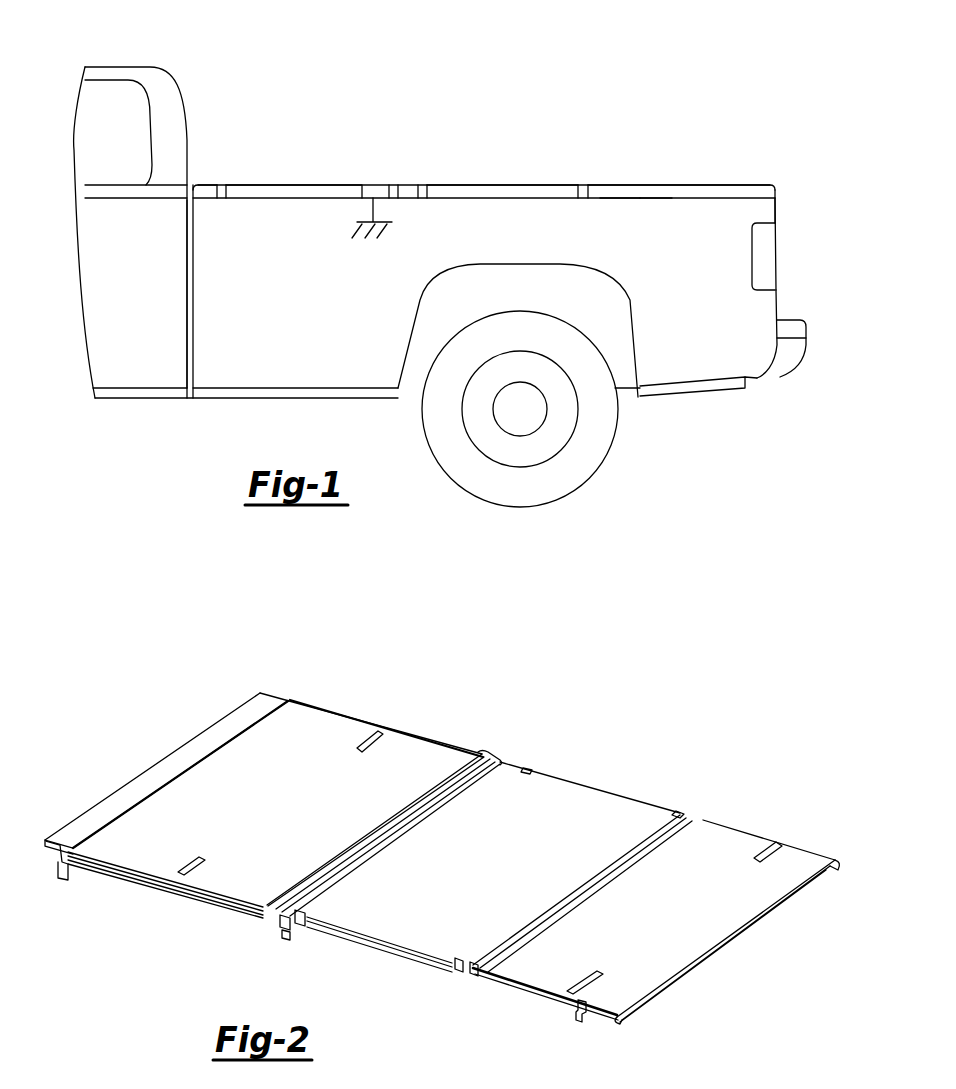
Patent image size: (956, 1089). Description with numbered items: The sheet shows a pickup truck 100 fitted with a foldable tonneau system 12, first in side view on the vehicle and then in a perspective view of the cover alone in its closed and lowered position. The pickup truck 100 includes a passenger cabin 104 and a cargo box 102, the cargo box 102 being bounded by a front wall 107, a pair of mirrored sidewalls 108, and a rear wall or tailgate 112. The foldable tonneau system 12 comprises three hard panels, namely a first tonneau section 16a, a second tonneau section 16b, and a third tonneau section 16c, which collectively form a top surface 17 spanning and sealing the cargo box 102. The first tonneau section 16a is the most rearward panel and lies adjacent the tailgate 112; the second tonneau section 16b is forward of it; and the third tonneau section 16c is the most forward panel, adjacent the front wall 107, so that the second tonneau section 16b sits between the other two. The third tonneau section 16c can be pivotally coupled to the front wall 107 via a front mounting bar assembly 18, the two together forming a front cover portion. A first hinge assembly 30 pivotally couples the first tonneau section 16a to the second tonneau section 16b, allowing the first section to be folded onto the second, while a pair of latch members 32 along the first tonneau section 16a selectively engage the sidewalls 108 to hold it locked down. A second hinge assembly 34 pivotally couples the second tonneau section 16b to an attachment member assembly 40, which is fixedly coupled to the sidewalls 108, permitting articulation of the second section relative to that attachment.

In FIG. 1, the pickup truck 100 is at (528, 82).
In FIG. 1, the passenger cabin 104 is at (110, 66).
In FIG. 1, the front wall 107 is at (190, 272).
In FIG. 1, the foldable tonneau system 12 is at (528, 152).
In FIG. 1, the front mounting bar assembly 18 is at (197, 185).
In FIG. 2, the front mounting bar assembly 18 is at (203, 742).
In FIG. 1, the first tonneau section 16a is at (718, 185).
In FIG. 2, the first tonneau section 16a is at (733, 842).
In FIG. 1, the second tonneau section 16b is at (437, 185).
In FIG. 2, the second tonneau section 16b is at (577, 792).
In FIG. 1, the third tonneau section 16c is at (295, 185).
In FIG. 2, the third tonneau section 16c is at (322, 737).
In FIG. 1, the top surface 17 is at (337, 185).
In FIG. 2, the top surface 17 is at (490, 888).
In FIG. 1, the first hinge assembly 30 is at (588, 182).
In FIG. 2, the latch members 32 is at (753, 855).
In FIG. 1, the second hinge assembly 34 is at (418, 210).
In FIG. 1, the attachment member assembly 40 is at (347, 220).
In FIG. 1, the cargo box 102 is at (657, 180).
In FIG. 1, the sidewalls 108 is at (651, 241).
In FIG. 1, the tailgate 112 is at (776, 213).